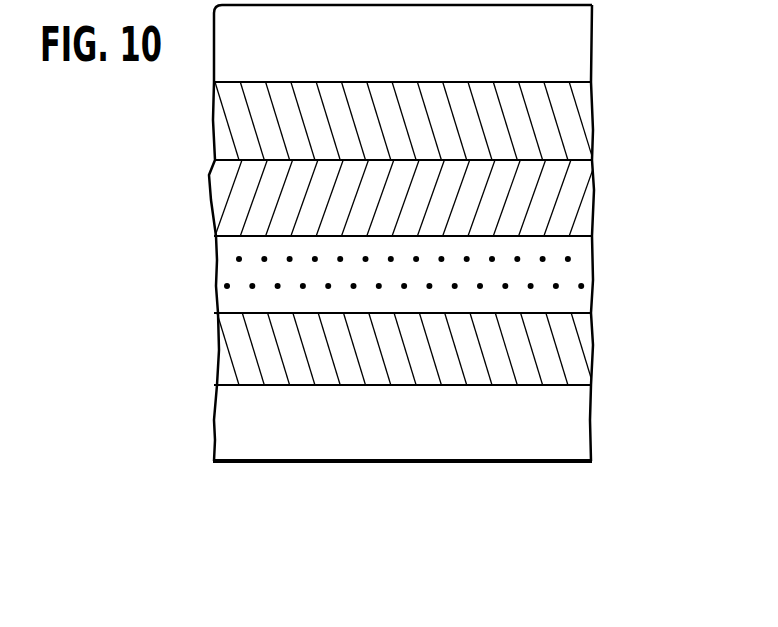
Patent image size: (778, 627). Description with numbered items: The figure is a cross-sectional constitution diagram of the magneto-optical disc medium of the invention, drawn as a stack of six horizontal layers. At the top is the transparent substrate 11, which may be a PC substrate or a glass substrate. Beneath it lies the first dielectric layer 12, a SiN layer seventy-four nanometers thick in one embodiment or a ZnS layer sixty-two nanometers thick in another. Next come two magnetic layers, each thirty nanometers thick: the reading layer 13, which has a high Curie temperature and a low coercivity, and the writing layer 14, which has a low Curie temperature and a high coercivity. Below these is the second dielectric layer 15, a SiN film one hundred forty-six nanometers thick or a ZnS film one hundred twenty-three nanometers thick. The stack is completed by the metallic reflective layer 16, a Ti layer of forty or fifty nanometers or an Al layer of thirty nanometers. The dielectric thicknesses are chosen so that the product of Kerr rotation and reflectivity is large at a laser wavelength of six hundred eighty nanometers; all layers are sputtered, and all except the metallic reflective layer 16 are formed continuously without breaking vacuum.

The transparent substrate 11 is at (575, 50).
The first dielectric layer 12 is at (572, 127).
The reading layer 13 is at (568, 197).
The writing layer 14 is at (571, 272).
The second dielectric layer 15 is at (568, 348).
The metallic reflective layer 16 is at (565, 423).